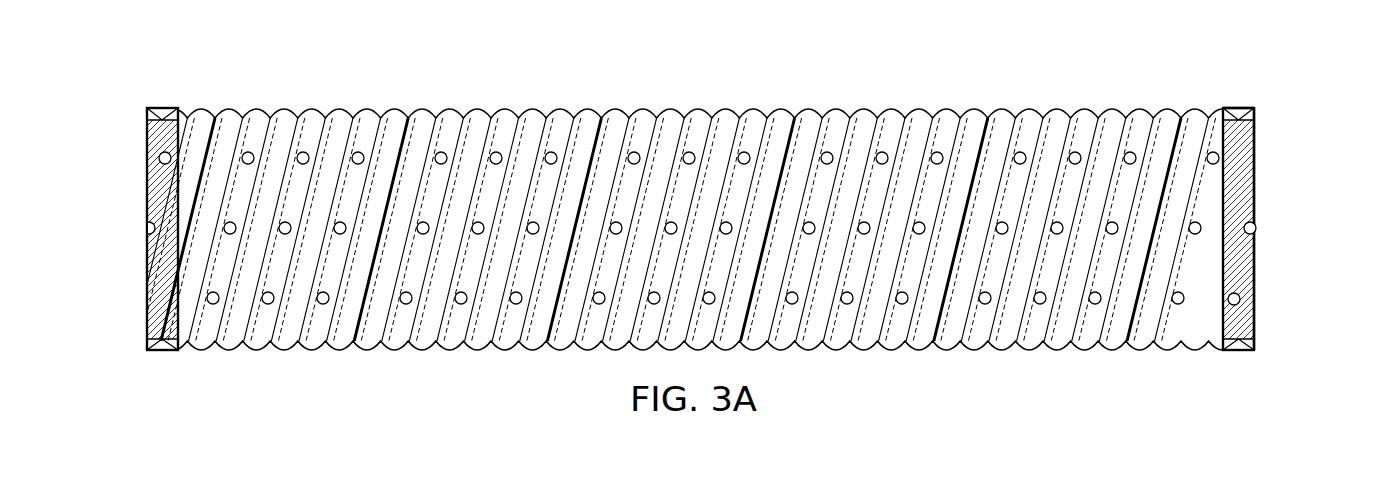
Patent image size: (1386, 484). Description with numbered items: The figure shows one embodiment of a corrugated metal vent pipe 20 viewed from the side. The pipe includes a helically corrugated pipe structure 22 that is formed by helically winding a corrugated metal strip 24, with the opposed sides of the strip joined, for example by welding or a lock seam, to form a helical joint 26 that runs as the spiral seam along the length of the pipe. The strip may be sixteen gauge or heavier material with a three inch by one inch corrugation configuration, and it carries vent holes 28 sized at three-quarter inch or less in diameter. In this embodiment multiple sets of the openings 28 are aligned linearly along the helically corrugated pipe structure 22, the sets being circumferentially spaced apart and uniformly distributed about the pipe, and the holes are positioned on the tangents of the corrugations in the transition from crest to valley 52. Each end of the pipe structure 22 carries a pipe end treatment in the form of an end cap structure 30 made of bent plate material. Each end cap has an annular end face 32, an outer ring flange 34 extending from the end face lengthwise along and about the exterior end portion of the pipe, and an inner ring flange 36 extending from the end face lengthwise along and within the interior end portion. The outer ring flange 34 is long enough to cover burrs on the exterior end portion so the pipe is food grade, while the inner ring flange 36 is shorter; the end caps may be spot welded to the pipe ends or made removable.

The corrugated metal vent pipe 20 is at (698, 209).
The helically corrugated pipe structure 22 is at (701, 115).
The corrugated metal strip 24 is at (298, 347).
The helical joint 26 is at (405, 121).
The vent holes 28 is at (516, 305).
The end cap structure 30 is at (705, 255).
The annular end face 32 is at (1256, 113).
The outer ring flange 34 is at (1237, 107).
The inner ring flange 36 is at (1247, 122).
The valley 52 is at (705, 226).